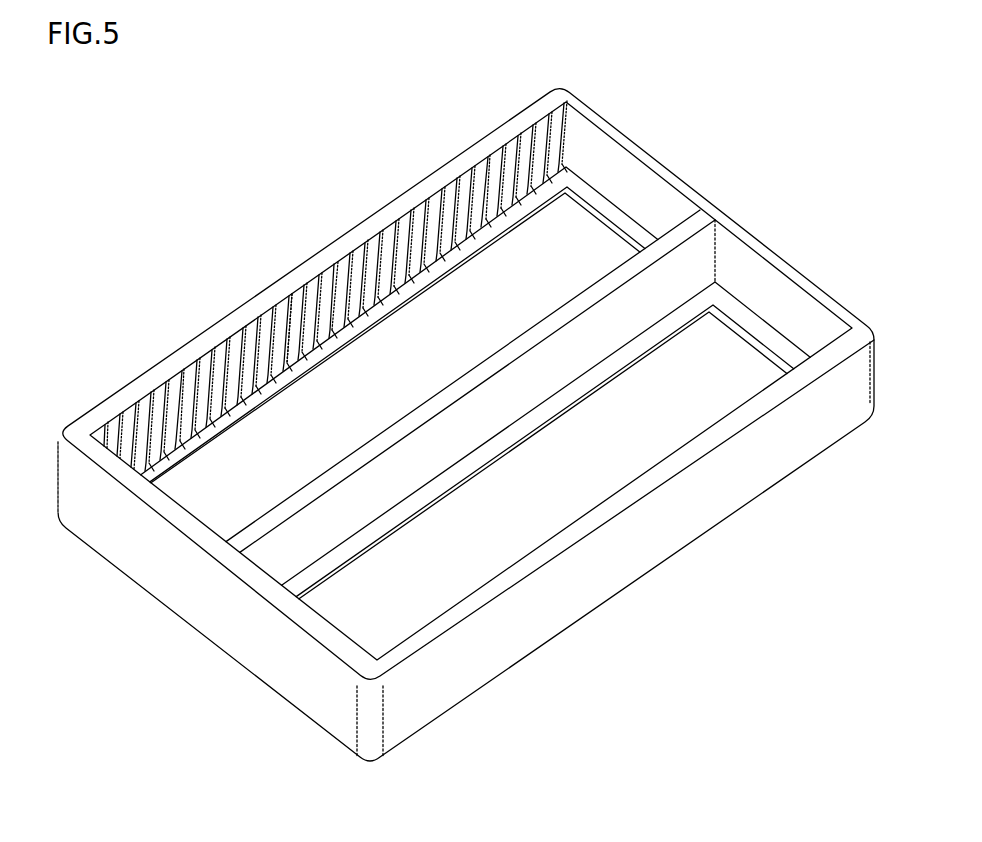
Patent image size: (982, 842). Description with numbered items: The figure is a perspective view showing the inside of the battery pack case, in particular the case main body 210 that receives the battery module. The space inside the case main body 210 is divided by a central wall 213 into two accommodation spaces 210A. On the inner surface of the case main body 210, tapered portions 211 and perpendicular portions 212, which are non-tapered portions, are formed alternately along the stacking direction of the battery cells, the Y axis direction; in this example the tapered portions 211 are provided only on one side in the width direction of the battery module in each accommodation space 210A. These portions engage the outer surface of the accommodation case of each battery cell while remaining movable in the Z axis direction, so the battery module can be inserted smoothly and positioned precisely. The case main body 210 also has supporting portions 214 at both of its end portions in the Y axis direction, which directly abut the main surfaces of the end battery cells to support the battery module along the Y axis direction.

The case main body 210 is at (757, 157).
The accommodation space 210A is at (583, 242).
The tapered portion 211 is at (436, 196).
The perpendicular portion 212 is at (306, 293).
The central wall 213 is at (512, 353).
The supporting portion 214 is at (628, 145).